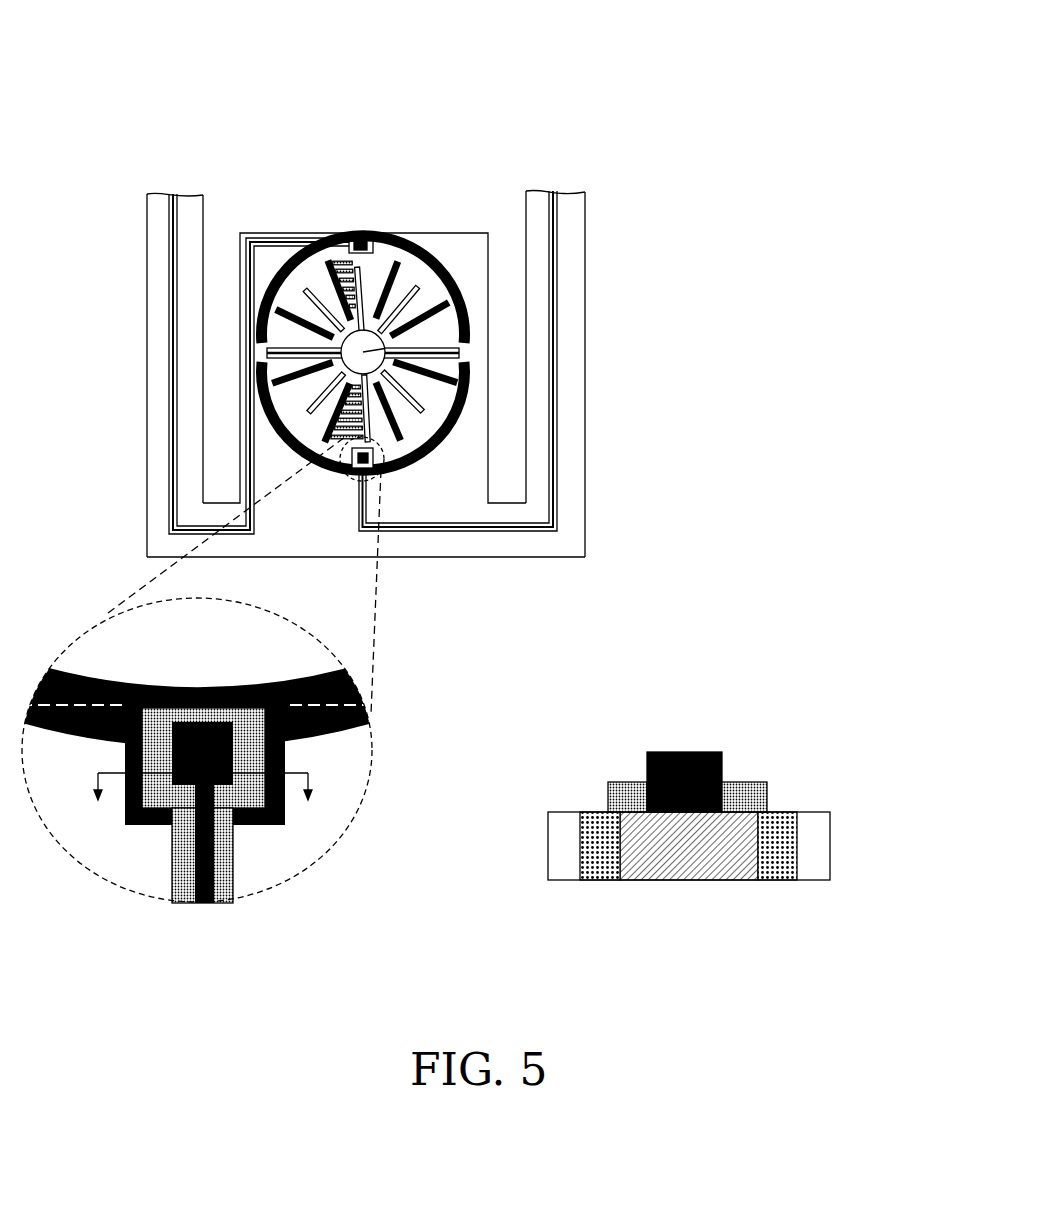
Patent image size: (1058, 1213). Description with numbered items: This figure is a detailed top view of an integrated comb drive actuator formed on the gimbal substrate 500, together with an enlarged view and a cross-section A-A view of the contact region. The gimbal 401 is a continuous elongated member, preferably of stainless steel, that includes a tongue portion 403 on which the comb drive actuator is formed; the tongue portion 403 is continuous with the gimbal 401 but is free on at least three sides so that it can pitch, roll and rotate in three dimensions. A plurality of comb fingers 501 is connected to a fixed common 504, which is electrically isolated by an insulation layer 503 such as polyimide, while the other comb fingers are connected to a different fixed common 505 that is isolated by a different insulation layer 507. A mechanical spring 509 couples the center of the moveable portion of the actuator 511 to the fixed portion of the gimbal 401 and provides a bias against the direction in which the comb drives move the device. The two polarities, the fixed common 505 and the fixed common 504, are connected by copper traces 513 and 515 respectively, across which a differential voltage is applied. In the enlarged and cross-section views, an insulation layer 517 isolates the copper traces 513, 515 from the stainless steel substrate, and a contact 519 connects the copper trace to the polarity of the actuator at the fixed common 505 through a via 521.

The gimbal substrate 500 is at (640, 78).
The gimbal 401 is at (578, 203).
The tongue portion 403 is at (256, 232).
The comb fingers 501 is at (349, 236).
The insulation layer 503 is at (393, 247).
The fixed common 504 is at (455, 298).
The fixed common 505 is at (462, 390).
The insulation layer 507 is at (447, 422).
The mechanical spring 509 is at (363, 352).
The moveable portion of the actuator 511 is at (440, 302).
The copper trace 513 is at (558, 510).
The copper trace 515 is at (169, 503).
The insulation layer 517 is at (160, 726).
The contact 519 is at (226, 722).
The via 521 is at (658, 793).